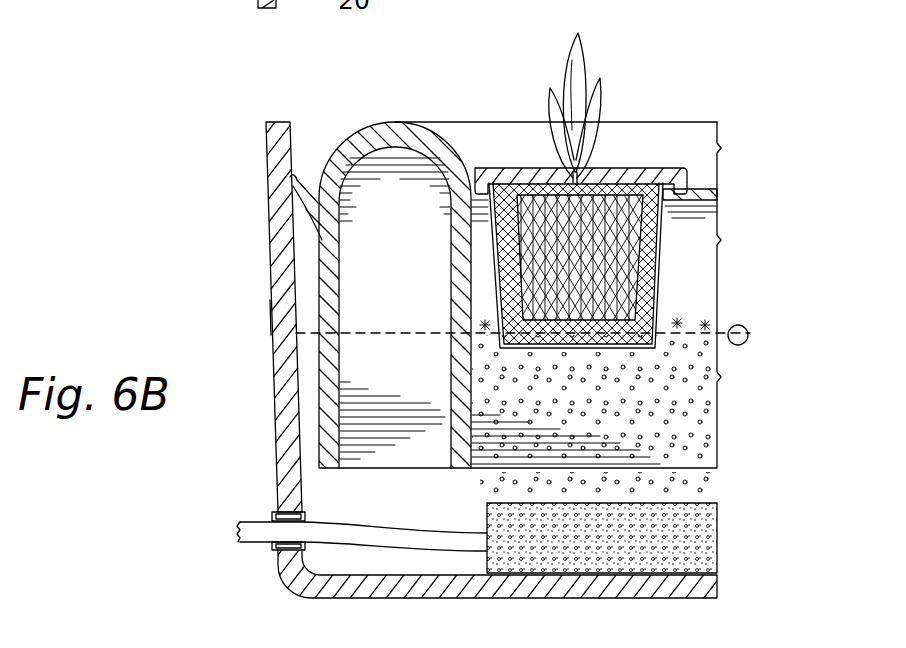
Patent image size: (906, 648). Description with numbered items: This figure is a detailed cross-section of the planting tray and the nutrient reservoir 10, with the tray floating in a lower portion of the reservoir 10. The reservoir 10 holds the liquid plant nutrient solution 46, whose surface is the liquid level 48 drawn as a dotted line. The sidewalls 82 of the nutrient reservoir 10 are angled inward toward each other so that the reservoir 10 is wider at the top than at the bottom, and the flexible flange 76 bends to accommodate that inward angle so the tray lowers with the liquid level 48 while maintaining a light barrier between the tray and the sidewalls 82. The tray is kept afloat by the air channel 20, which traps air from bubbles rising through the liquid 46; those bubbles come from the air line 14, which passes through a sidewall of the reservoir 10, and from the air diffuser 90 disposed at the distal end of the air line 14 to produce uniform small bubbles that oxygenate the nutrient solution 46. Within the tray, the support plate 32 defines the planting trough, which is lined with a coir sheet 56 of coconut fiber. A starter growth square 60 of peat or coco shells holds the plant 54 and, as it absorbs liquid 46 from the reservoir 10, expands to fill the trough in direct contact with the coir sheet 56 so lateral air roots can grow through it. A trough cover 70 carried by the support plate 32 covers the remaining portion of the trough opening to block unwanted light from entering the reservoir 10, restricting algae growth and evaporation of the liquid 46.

The nutrient reservoir 10 is at (252, 196).
The air line 14 is at (264, 520).
The air channel 20 is at (427, 432).
The support plate 32 is at (717, 193).
The liquid plant nutrient solution 46 is at (714, 401).
The liquid surface 48 is at (716, 330).
The plant 54 is at (580, 36).
The coir sheet 56 is at (663, 215).
The starter growth square 60 is at (602, 200).
The trough cover 70 is at (655, 170).
The flexible flange 76 is at (300, 175).
The sidewalls 82 is at (270, 318).
The air diffuser 90 is at (700, 537).